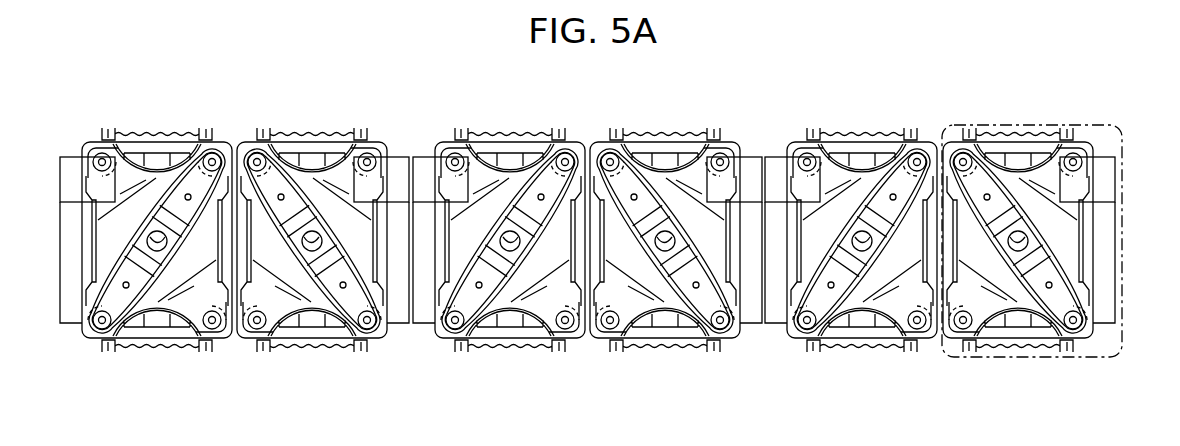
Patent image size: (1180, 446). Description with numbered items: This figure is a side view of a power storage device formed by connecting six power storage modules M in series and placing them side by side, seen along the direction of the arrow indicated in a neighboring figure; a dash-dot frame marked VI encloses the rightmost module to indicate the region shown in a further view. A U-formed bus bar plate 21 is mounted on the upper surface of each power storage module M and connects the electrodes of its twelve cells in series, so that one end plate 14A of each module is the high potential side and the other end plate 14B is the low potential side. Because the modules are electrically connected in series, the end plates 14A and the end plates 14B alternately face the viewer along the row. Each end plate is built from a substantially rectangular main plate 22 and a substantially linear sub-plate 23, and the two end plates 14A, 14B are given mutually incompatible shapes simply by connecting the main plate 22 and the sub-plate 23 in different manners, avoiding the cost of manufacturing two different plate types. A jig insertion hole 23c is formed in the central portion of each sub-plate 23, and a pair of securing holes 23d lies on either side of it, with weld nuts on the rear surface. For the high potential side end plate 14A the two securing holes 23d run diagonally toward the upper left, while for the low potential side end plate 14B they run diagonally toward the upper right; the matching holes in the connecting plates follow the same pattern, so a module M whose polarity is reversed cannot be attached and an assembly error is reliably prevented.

The power storage module M is at (996, 110).
The bus bar plate 21 is at (1103, 168).
The main plate 22 is at (994, 324).
The sub-plate 23 is at (1048, 300).
The jig insertion hole 23c is at (981, 258).
The securing hole 23d is at (1049, 282).
The end plate 14A is at (1050, 385).
The end plate 14B is at (893, 385).
The section view VI is at (953, 120).